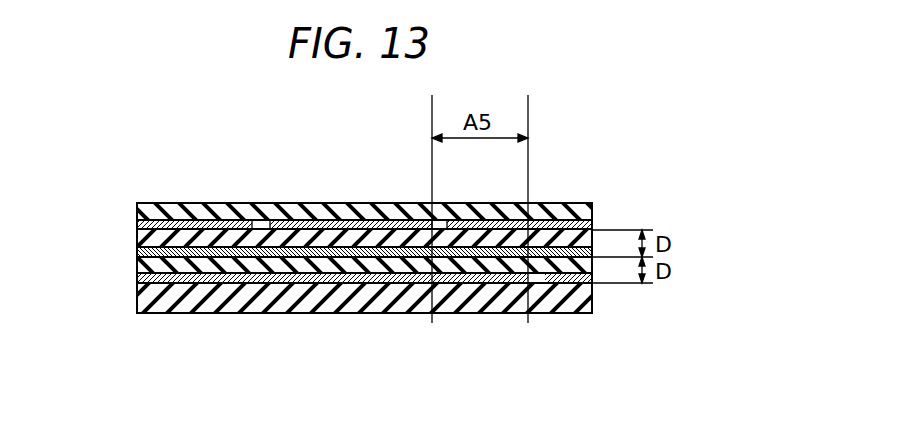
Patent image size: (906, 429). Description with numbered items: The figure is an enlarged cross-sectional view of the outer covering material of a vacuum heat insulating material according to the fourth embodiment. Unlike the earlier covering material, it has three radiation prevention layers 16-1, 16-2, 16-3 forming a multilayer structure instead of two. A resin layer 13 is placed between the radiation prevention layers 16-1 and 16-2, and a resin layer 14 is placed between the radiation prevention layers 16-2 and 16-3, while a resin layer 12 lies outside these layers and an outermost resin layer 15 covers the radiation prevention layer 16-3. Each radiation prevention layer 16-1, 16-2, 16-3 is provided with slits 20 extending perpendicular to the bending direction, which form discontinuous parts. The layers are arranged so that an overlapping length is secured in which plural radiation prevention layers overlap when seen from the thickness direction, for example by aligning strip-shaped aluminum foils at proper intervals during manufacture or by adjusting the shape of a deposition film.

The resin layer 12 is at (150, 292).
The resin layer 13 is at (150, 254).
The resin layer 14 is at (150, 229).
The outermost resin layer 15 is at (158, 205).
The radiation prevention layer 16-1 is at (230, 278).
The radiation prevention layer 16-2 is at (330, 262).
The radiation prevention layer 16-3 is at (306, 204).
The slit 20 is at (262, 222).